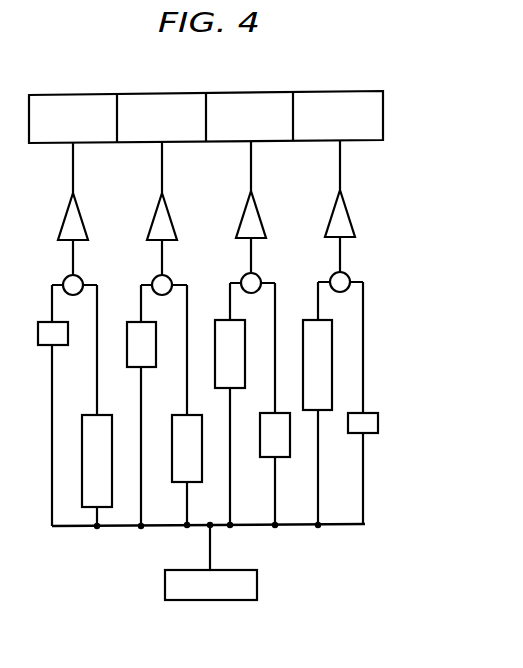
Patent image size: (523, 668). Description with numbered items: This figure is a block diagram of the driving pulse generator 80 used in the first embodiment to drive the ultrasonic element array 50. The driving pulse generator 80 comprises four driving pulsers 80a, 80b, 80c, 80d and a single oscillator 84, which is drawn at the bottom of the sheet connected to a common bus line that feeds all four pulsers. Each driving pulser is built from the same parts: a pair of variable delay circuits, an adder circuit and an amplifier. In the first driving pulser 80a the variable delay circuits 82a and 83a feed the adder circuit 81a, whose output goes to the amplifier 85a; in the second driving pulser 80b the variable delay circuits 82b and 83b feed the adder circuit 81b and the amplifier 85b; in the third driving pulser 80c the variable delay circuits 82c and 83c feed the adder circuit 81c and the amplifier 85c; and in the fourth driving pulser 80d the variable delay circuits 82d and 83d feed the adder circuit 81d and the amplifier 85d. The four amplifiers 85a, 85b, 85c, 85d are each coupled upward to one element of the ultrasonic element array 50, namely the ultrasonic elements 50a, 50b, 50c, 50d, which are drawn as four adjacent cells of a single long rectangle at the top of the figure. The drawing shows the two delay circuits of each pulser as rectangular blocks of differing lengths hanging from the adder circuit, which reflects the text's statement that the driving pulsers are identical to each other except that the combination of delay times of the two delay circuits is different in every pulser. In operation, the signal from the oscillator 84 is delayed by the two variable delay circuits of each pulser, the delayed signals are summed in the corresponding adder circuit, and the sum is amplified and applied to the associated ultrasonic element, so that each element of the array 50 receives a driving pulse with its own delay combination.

The ultrasonic element array 50 is at (245, 101).
The ultrasonic element 50a is at (66, 95).
The ultrasonic element 50b is at (157, 94).
The ultrasonic element 50c is at (237, 92).
The ultrasonic element 50d is at (325, 91).
The driving pulse generator 80 is at (256, 371).
The driving pulser 80a is at (77, 373).
The driving pulser 80b is at (165, 372).
The driving pulser 80c is at (265, 371).
The driving pulser 80d is at (349, 370).
The adder circuit 81a is at (80, 280).
The adder circuit 81b is at (169, 280).
The adder circuit 81c is at (258, 278).
The adder circuit 81d is at (347, 277).
The variable delay circuit 82a is at (46, 338).
The variable delay circuit 82b is at (135, 358).
The variable delay circuit 82c is at (223, 380).
The variable delay circuit 82d is at (313, 396).
The variable delay circuit 83a is at (104, 497).
The variable delay circuit 83b is at (192, 472).
The variable delay circuit 83c is at (280, 448).
The variable delay circuit 83d is at (368, 425).
The oscillator 84 is at (259, 585).
The amplifier 85a is at (75, 228).
The amplifier 85b is at (164, 228).
The amplifier 85c is at (253, 226).
The amplifier 85d is at (342, 225).